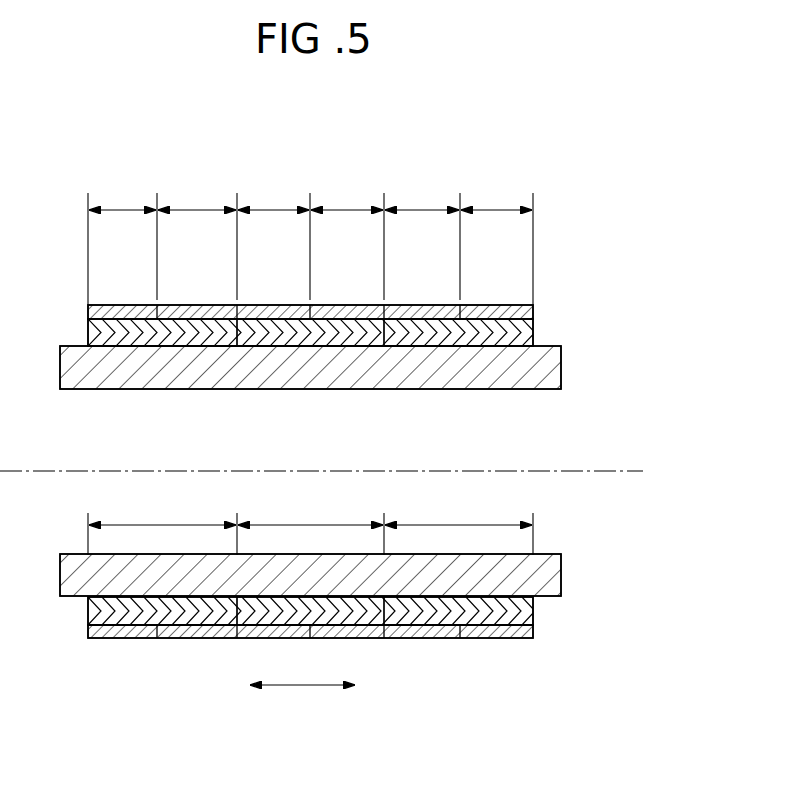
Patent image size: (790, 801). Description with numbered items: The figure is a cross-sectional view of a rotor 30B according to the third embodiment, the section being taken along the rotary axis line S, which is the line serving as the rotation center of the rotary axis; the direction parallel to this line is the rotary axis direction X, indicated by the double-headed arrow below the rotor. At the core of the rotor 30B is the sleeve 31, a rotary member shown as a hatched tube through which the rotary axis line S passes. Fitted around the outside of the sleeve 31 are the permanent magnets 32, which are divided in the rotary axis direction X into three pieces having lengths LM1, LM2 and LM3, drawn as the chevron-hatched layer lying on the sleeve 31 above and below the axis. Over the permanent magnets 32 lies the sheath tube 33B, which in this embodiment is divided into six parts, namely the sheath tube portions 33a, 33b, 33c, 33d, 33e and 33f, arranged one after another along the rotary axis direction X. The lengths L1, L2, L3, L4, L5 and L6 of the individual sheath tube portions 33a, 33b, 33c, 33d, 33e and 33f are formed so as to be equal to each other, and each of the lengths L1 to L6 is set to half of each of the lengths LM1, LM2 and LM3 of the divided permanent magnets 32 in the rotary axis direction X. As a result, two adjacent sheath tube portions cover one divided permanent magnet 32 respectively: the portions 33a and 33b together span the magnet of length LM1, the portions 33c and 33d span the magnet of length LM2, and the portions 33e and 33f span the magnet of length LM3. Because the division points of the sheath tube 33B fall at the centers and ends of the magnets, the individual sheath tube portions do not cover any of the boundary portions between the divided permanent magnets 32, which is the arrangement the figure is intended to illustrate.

The rotor 30B is at (607, 246).
The sleeve 31 is at (562, 360).
The permanent magnets 32 is at (146, 332).
The sheath tube 33B is at (552, 305).
The sheath tube portion 33a is at (129, 305).
The sheath tube portion 33b is at (197, 305).
The sheath tube portion 33c is at (274, 305).
The sheath tube portion 33d is at (349, 305).
The sheath tube portion 33e is at (423, 305).
The sheath tube portion 33f is at (495, 305).
The rotary axis line S is at (600, 471).
The rotary axis direction X is at (302, 686).
The length of sheath tube portion L1 is at (122, 193).
The length of sheath tube portion L2 is at (197, 193).
The length of sheath tube portion L3 is at (273, 193).
The length of sheath tube portion L4 is at (347, 193).
The length of sheath tube portion L5 is at (422, 193).
The length of sheath tube portion L6 is at (496, 193).
The length of divided permanent magnet LM1 is at (162, 510).
The length of divided permanent magnet LM2 is at (310, 510).
The length of divided permanent magnet LM3 is at (458, 510).